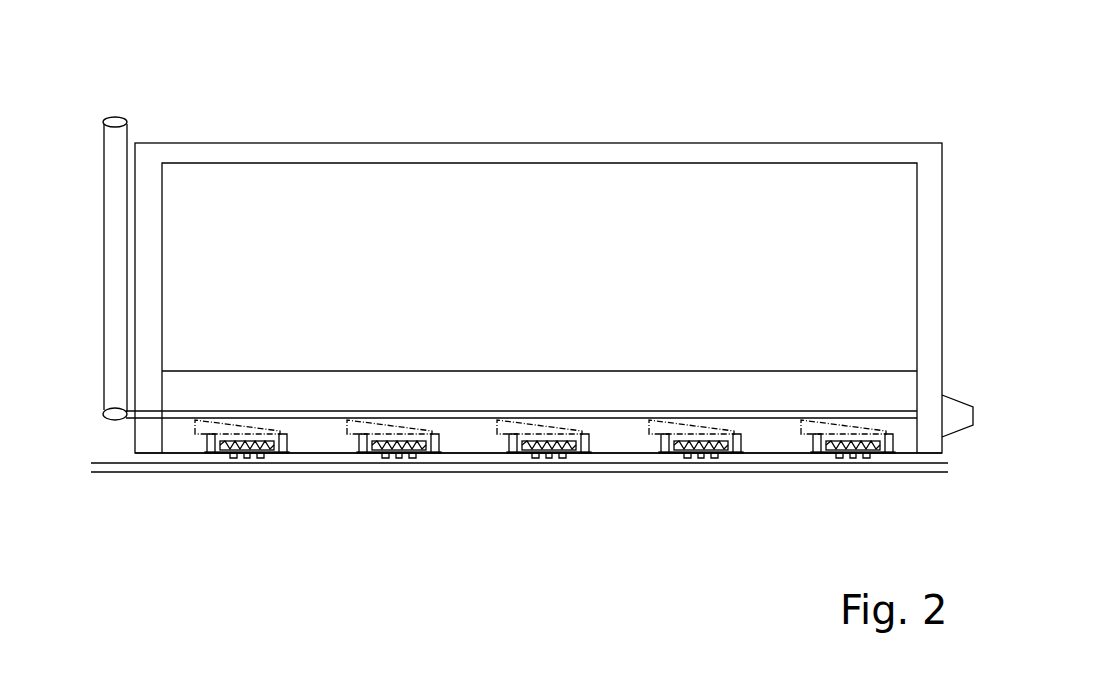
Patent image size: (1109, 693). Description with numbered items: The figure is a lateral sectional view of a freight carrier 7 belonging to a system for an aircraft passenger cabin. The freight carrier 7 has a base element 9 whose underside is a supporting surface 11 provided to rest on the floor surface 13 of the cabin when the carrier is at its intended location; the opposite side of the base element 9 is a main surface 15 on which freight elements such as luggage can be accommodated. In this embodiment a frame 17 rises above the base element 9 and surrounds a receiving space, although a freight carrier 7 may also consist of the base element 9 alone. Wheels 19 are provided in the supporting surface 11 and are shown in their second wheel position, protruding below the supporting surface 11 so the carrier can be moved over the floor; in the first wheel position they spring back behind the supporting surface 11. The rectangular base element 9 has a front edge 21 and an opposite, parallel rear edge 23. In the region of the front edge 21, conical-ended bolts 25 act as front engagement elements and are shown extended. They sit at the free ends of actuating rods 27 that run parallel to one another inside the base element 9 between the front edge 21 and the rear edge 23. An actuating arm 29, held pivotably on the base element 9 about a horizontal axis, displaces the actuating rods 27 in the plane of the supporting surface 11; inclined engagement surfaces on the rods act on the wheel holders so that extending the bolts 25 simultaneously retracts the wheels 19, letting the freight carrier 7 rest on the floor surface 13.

The freight carrier 7 is at (800, 124).
The base element 9 is at (622, 395).
The supporting surface 11 is at (770, 455).
The floor surface 13 is at (146, 464).
The main surface 15 is at (552, 370).
The frame 17 is at (602, 150).
The wheels 19 is at (242, 458).
The front edge 21 is at (963, 448).
The rear edge 23 is at (113, 436).
The bolts 25 is at (956, 386).
The actuating rods 27 is at (472, 405).
The actuating arm 29 is at (112, 245).